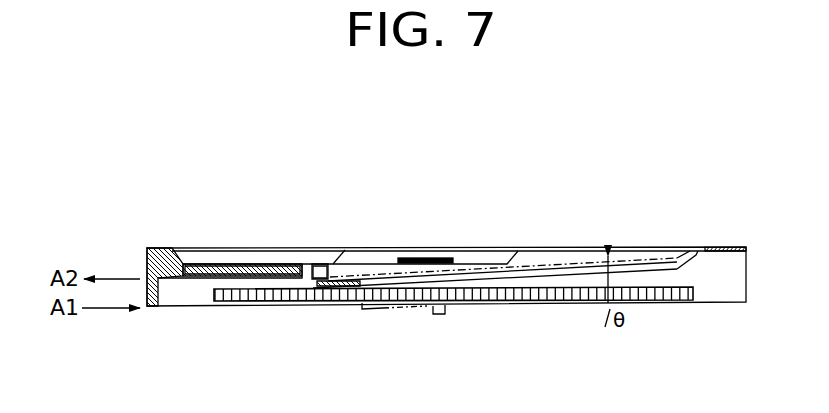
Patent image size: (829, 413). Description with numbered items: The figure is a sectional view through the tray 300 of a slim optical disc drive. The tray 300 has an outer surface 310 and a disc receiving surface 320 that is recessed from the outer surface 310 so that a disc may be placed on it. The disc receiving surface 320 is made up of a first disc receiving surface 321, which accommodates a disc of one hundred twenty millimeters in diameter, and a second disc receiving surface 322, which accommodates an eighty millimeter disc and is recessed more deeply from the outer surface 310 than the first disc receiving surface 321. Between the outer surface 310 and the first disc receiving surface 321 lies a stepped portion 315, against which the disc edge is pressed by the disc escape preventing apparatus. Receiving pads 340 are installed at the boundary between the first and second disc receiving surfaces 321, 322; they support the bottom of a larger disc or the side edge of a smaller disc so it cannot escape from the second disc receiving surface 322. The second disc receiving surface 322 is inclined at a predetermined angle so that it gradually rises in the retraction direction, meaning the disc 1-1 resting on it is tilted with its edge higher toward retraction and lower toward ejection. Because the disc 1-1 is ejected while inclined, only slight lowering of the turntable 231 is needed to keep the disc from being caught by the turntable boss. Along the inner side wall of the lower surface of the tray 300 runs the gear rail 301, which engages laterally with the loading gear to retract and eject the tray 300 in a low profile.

The tray 300 is at (151, 210).
The stepped portion 315 is at (183, 248).
The disc receiving surface 320 is at (323, 189).
The first disc receiving surface 321 is at (233, 250).
The second disc receiving surface 322 is at (323, 263).
The receiving pads 340 is at (430, 257).
The disc 1-1 is at (487, 272).
The outer surface 310 is at (727, 246).
The gear rail 301 is at (560, 301).
The turntable 231 is at (375, 310).